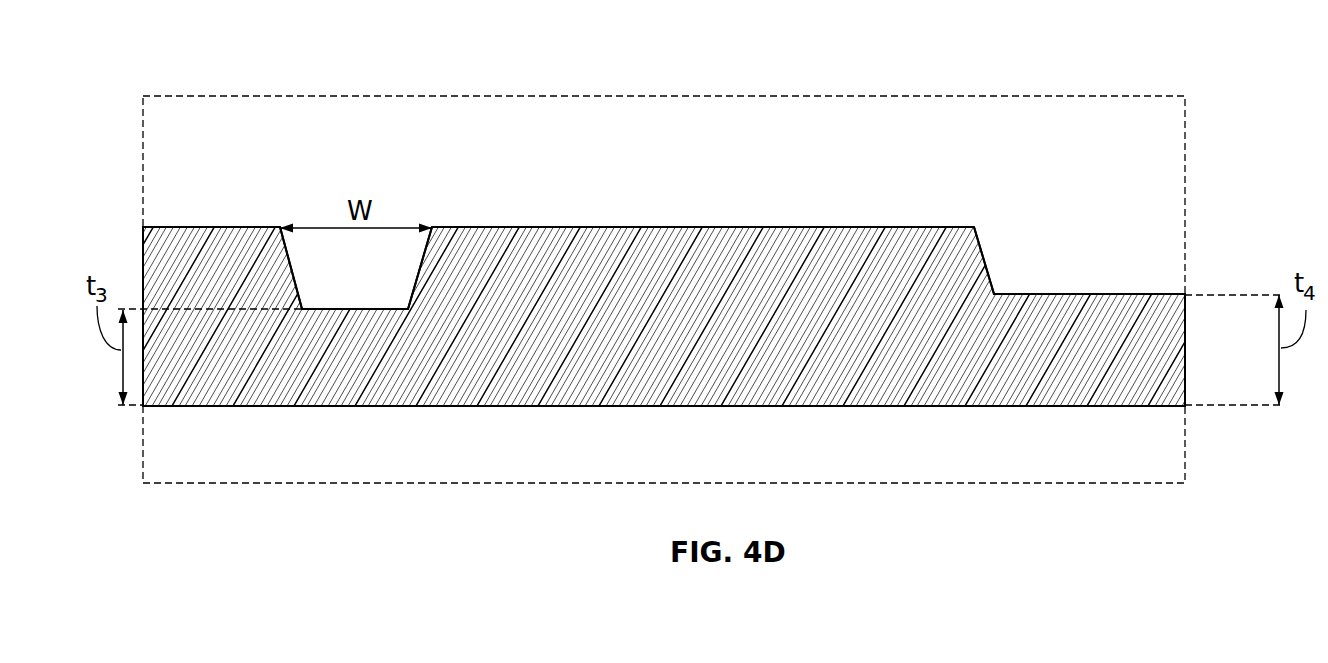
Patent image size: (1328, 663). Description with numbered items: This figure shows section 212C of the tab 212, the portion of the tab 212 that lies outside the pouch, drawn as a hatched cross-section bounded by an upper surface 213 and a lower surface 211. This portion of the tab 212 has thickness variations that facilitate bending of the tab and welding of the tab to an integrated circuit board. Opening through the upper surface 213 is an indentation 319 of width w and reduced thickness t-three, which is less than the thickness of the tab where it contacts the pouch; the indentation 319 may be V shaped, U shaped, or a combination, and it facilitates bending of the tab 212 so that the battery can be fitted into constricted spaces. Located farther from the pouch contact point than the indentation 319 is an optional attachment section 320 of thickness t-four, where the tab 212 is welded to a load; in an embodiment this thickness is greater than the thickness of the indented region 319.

The section 212C is at (824, 96).
The tab 212 is at (713, 334).
The upper surface 213 is at (857, 228).
The indentation 319 is at (345, 308).
The attachment section 320 is at (1068, 294).
The lower surface 211 is at (824, 408).